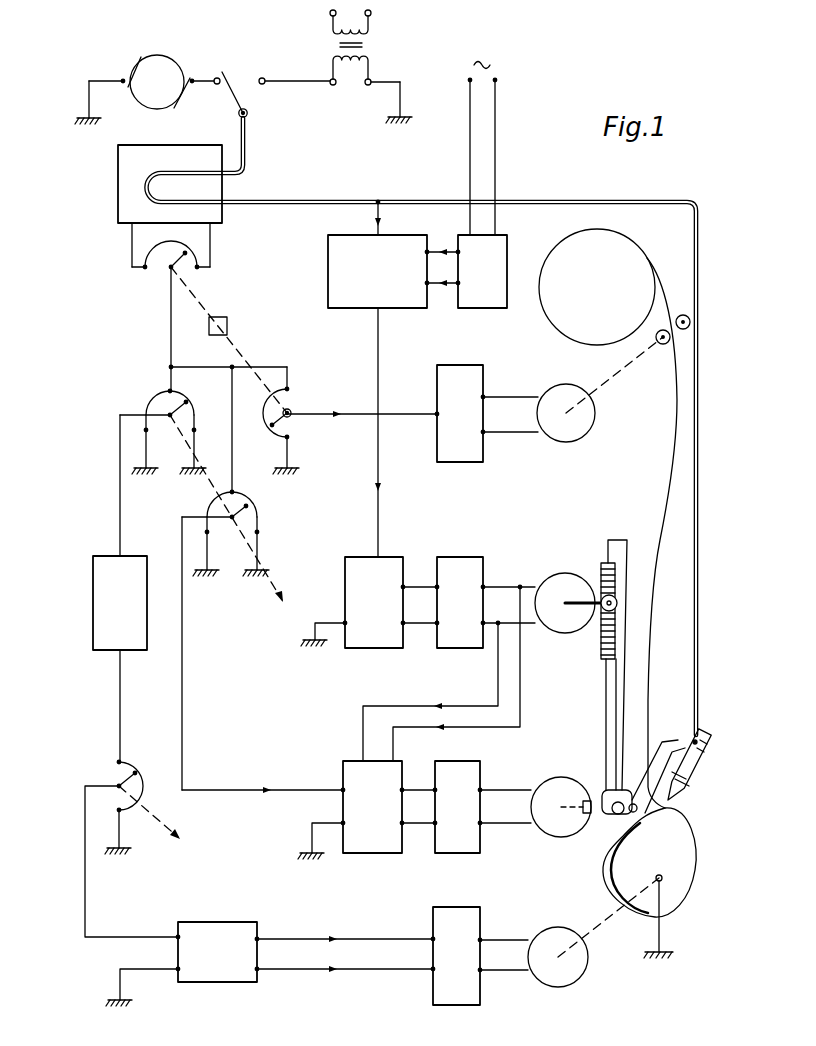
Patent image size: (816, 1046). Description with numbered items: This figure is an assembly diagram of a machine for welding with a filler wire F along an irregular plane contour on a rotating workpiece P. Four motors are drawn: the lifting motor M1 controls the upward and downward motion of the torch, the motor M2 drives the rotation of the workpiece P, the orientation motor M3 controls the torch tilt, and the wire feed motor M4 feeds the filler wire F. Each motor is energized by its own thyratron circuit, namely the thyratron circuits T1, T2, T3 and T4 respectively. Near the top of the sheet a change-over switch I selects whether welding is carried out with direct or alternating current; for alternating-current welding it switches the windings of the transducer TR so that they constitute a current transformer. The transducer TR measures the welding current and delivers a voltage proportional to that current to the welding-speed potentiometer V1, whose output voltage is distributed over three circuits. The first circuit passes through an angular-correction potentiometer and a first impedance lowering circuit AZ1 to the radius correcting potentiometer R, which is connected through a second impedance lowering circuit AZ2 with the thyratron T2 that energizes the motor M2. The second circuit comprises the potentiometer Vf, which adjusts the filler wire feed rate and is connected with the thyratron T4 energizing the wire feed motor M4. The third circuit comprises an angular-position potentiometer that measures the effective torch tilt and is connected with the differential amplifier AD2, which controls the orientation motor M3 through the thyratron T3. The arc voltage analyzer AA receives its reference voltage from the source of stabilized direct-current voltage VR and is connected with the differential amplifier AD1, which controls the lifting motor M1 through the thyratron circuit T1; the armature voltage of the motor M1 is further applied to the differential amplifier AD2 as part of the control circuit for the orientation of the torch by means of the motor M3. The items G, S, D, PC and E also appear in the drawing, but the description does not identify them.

The generator G is at (144, 85).
The change-over switch I is at (422, 403).
The transducer TR is at (125, 183).
The thyratron circuit T1 is at (432, 385).
The secondary winding S is at (341, 100).
The arc voltage analyzer AA is at (412, 310).
The source of stabilized D.C. voltage VR is at (466, 271).
The drum D is at (640, 260).
The welding speed potentiometer V1 is at (213, 366).
The photocell PC is at (227, 326).
The filler wire feed rate potentiometer Vf is at (350, 430).
The thyratron circuit T4 is at (486, 413).
The wire feed motor M4 is at (556, 393).
The orientation motor M3 is at (557, 786).
The first impedance lowering circuit AZ1 is at (120, 659).
The differential amplifier AD1 is at (370, 602).
The lifting motor M1 is at (556, 566).
The filler wire F is at (653, 639).
The differential amplifier AD2 is at (309, 810).
The thyratron circuit T3 is at (483, 807).
The radius correcting potentiometer R is at (132, 850).
The stylus E is at (677, 804).
The workpiece P is at (625, 875).
The second impedance lowering circuit AZ2 is at (270, 964).
The thyratron circuit T2 is at (480, 956).
The workpiece rotation motor M2 is at (557, 937).